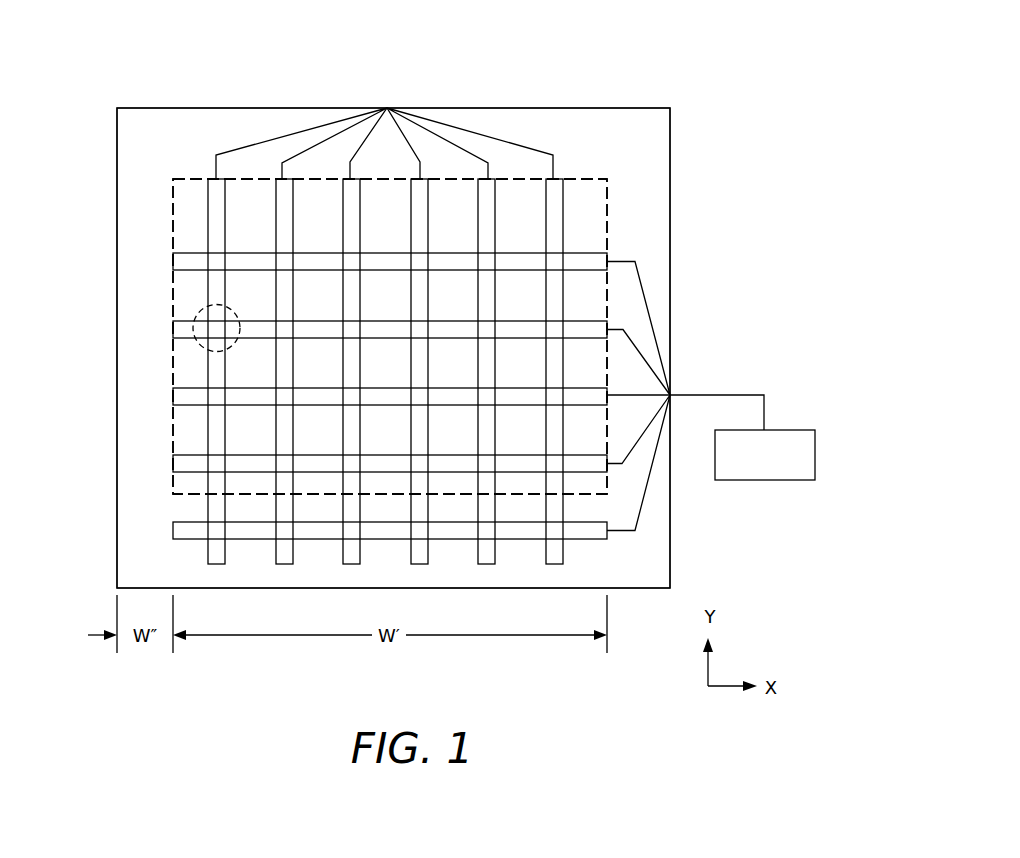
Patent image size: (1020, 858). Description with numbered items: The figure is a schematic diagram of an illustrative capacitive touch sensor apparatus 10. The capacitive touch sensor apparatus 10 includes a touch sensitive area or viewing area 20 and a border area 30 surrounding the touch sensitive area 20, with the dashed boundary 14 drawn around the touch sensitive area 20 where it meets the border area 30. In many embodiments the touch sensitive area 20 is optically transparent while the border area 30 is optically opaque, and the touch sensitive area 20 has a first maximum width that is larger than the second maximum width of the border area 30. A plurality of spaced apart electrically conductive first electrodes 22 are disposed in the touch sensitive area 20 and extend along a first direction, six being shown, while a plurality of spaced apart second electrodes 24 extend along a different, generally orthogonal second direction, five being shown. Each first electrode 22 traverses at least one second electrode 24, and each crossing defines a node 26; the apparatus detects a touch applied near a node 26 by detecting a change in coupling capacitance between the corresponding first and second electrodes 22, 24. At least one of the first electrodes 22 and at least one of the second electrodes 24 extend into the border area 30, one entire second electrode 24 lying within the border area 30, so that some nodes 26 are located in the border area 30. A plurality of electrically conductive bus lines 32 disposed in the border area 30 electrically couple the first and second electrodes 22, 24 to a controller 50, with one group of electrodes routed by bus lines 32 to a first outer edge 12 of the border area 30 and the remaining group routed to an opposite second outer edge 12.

The capacitive touch sensor apparatus 10 is at (672, 34).
The outer edge 12 is at (202, 108).
The active area 14 is at (173, 194).
The touch sensitive area 20 is at (398, 375).
The first electrodes 22 is at (563, 203).
The second electrodes 24 is at (584, 260).
The node 26 is at (197, 315).
The border area 30 is at (135, 386).
The bus lines 32 is at (304, 131).
The controller 50 is at (757, 469).